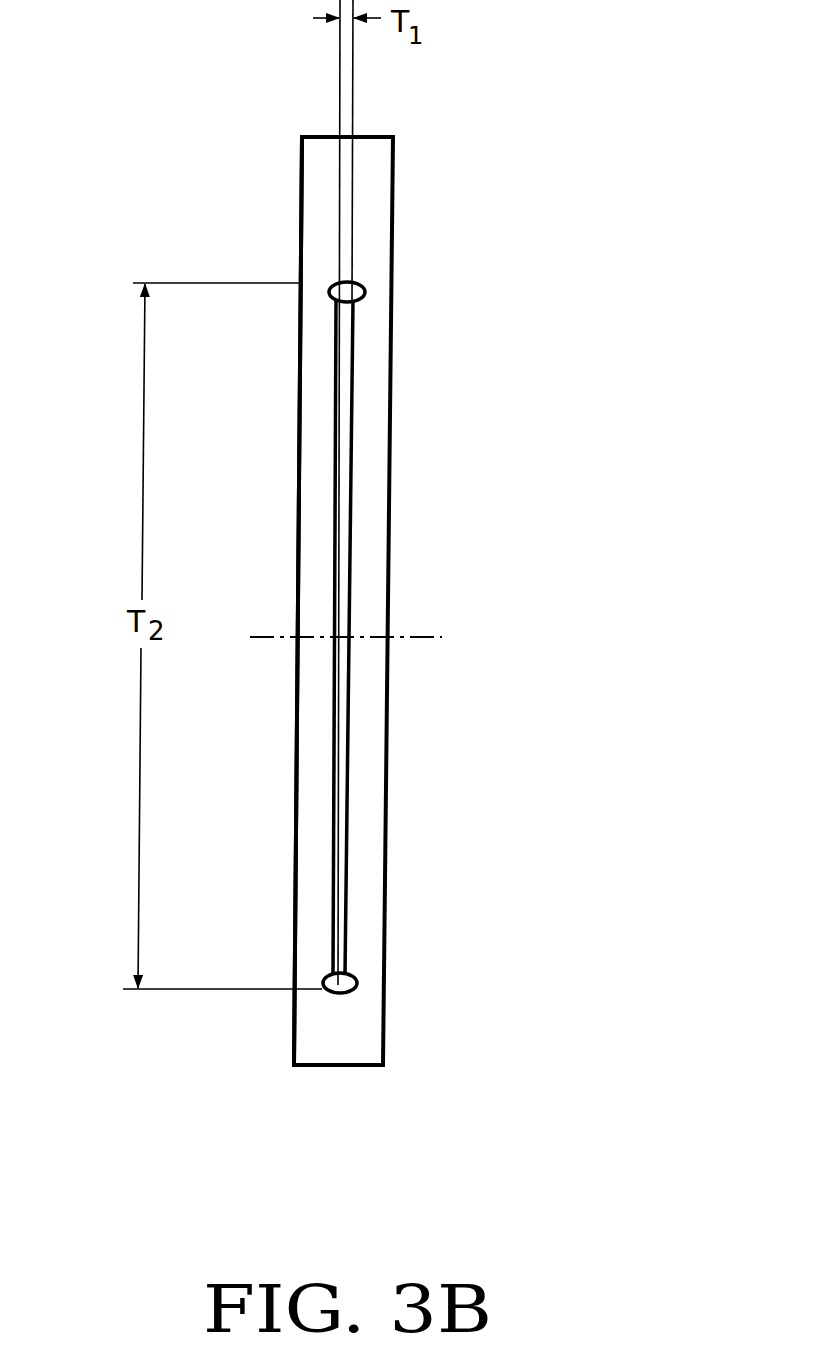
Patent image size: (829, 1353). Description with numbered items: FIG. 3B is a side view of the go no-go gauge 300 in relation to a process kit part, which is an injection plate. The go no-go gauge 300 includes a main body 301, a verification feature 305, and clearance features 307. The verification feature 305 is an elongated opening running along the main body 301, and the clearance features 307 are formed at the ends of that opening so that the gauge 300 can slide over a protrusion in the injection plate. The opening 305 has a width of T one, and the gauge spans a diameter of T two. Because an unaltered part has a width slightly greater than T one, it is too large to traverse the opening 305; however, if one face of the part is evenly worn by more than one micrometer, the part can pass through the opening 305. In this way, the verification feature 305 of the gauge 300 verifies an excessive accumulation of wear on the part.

The go no-go gauge 300 is at (217, 227).
The main body 301 is at (300, 247).
The verification feature 305 is at (350, 760).
The clearance features 307 is at (357, 976).